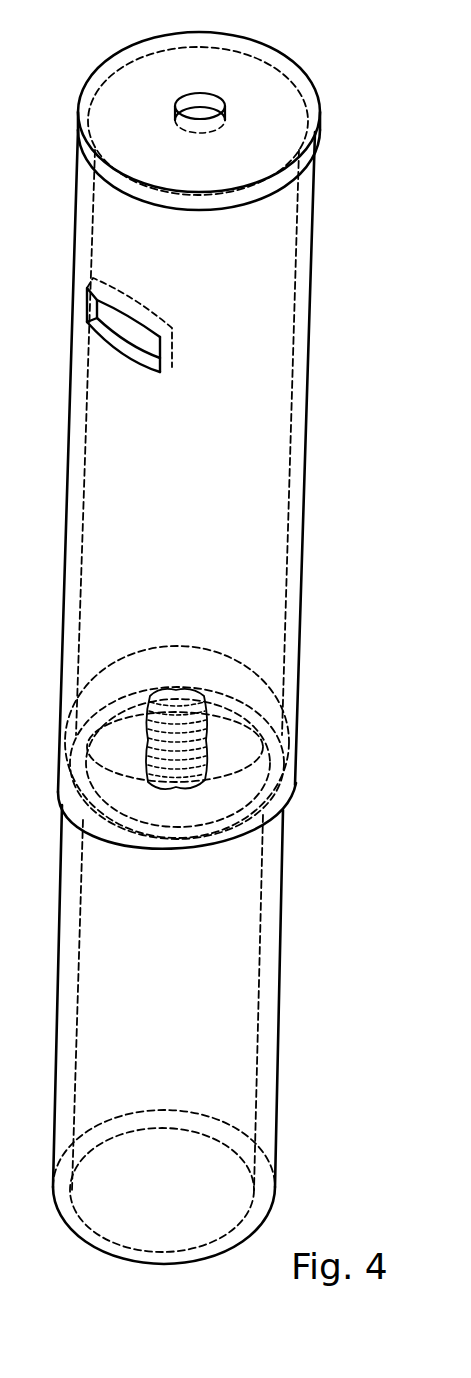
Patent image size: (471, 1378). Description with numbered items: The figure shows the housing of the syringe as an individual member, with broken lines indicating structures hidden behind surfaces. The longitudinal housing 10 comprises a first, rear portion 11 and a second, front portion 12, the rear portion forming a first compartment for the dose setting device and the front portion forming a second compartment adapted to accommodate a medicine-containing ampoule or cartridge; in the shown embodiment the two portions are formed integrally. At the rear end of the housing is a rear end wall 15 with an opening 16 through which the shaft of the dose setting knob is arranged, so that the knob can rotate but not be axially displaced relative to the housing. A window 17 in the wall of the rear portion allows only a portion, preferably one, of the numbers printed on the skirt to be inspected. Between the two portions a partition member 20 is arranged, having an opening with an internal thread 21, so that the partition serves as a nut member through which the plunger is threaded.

The longitudinal housing 10 is at (307, 681).
The first (rear) portion 11 is at (253, 541).
The second (front) portion 12 is at (227, 998).
The rear end wall 15 is at (276, 120).
The opening 16 is at (226, 117).
The window 17 is at (175, 362).
The partition member 20 is at (225, 797).
The internal thread 21 is at (207, 751).